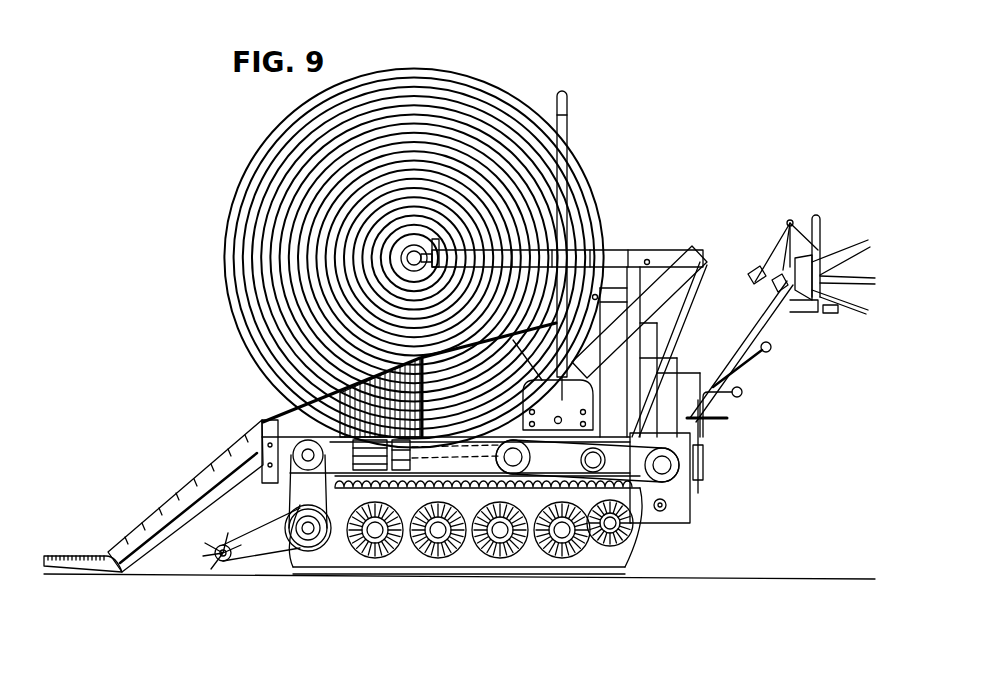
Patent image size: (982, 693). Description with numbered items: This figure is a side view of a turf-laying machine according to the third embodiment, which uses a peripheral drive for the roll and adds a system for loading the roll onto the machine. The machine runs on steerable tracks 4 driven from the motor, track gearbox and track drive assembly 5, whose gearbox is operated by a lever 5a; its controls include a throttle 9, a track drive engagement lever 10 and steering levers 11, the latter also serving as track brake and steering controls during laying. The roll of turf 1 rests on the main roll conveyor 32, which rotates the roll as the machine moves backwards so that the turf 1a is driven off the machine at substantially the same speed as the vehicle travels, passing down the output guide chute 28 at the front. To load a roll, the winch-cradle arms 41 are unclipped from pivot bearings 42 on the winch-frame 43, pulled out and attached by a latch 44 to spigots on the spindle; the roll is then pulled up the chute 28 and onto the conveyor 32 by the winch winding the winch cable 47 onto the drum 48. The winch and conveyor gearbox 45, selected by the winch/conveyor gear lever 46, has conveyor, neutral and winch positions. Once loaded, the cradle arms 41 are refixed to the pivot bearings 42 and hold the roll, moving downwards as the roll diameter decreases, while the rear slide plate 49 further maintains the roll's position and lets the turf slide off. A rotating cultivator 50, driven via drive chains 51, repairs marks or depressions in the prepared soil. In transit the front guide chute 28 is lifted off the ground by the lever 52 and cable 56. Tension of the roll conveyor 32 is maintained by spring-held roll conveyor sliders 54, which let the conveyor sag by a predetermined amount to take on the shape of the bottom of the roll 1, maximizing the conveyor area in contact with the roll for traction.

The roll of turf 1 is at (413, 241).
The turf 1a is at (83, 587).
The steerable tracks 4 is at (465, 547).
The motor, track gearbox and track drive assembly 5 is at (719, 446).
The lever 5a is at (753, 412).
The throttle 9 is at (769, 247).
The track drive engagement lever 10 is at (829, 257).
The steering levers 11 is at (862, 336).
The output guide chute 28 is at (185, 519).
The main roll conveyor 32 is at (522, 461).
The winch-cradle arms 41 is at (567, 317).
The pivot bearings 42 is at (641, 290).
The winch-frame 43 is at (691, 323).
The latch 44 is at (447, 239).
The winch and conveyor gearbox 45 is at (511, 478).
The winch/conveyor gear lever 46 is at (769, 364).
The winch cable 47 is at (741, 332).
The drum 48 is at (638, 503).
The rear slide plate 49 is at (598, 294).
The rotating cultivator 50 is at (224, 560).
The drive chains 51 is at (257, 562).
The lever 52 is at (587, 245).
The roll conveyor sliders 54 is at (389, 403).
The cable 56 is at (558, 405).